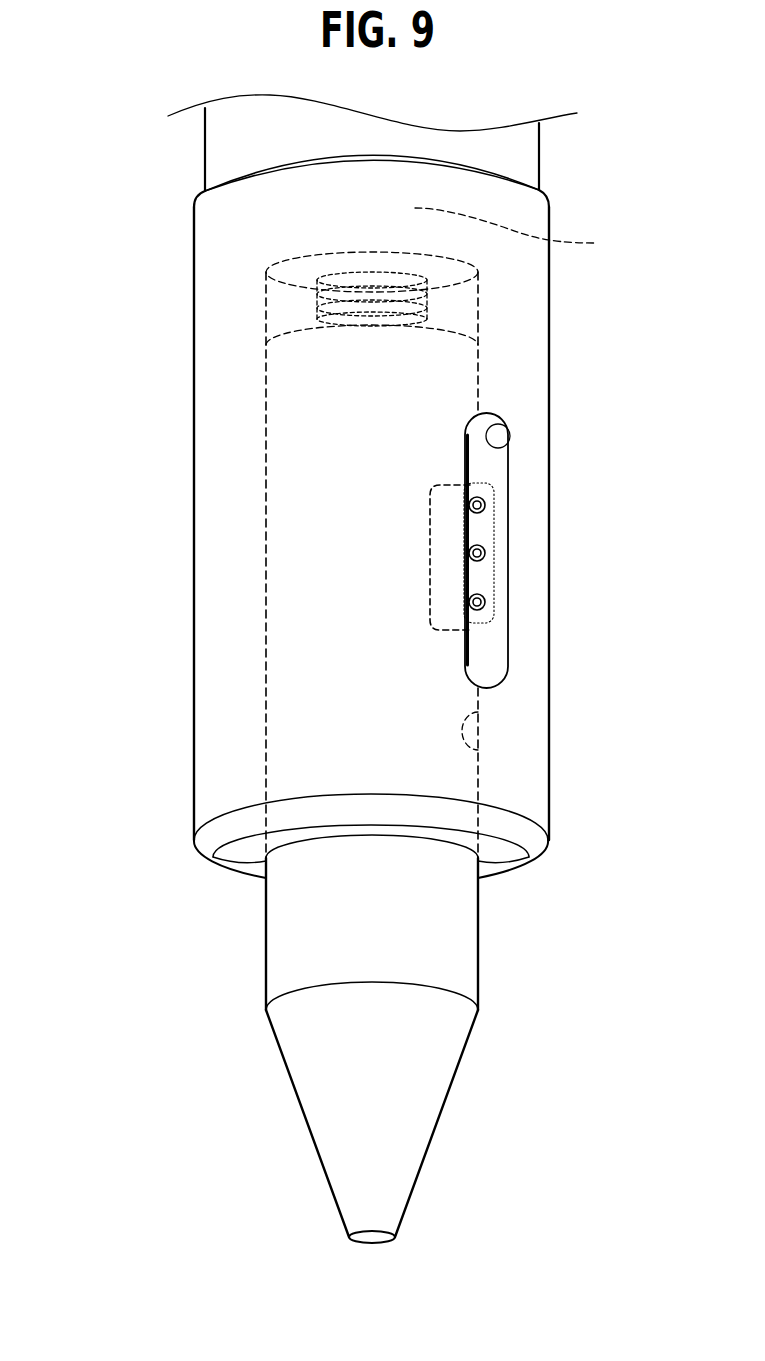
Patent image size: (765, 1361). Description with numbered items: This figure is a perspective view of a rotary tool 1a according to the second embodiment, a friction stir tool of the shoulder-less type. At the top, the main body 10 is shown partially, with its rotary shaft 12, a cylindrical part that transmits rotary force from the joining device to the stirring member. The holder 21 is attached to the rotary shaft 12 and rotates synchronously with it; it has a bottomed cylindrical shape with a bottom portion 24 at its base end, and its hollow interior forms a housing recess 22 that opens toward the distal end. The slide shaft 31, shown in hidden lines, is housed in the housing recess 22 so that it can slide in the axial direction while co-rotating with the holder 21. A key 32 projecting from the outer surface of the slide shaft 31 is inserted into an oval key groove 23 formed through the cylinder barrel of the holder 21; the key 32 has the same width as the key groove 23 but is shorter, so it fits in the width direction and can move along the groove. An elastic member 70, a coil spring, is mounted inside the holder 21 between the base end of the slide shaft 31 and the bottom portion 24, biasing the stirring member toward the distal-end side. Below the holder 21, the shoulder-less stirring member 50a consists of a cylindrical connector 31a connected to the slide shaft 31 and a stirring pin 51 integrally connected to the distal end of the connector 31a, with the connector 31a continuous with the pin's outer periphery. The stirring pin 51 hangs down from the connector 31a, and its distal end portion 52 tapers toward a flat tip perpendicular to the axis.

The rotary tool 1a is at (125, 179).
The main body 10 is at (160, 281).
The rotary shaft 12 is at (529, 159).
The holder 21 is at (232, 492).
The housing recess 22 is at (478, 750).
The key groove 23 is at (492, 447).
The bottom portion 24 is at (523, 233).
The slide shaft 31 is at (316, 583).
The connector 31a is at (300, 935).
The key 32 is at (483, 572).
The shoulder-less stirring member 50a is at (172, 913).
The stirring pin 51 is at (350, 1101).
The distal end portion 52 is at (352, 1198).
The elastic member 70 is at (427, 306).